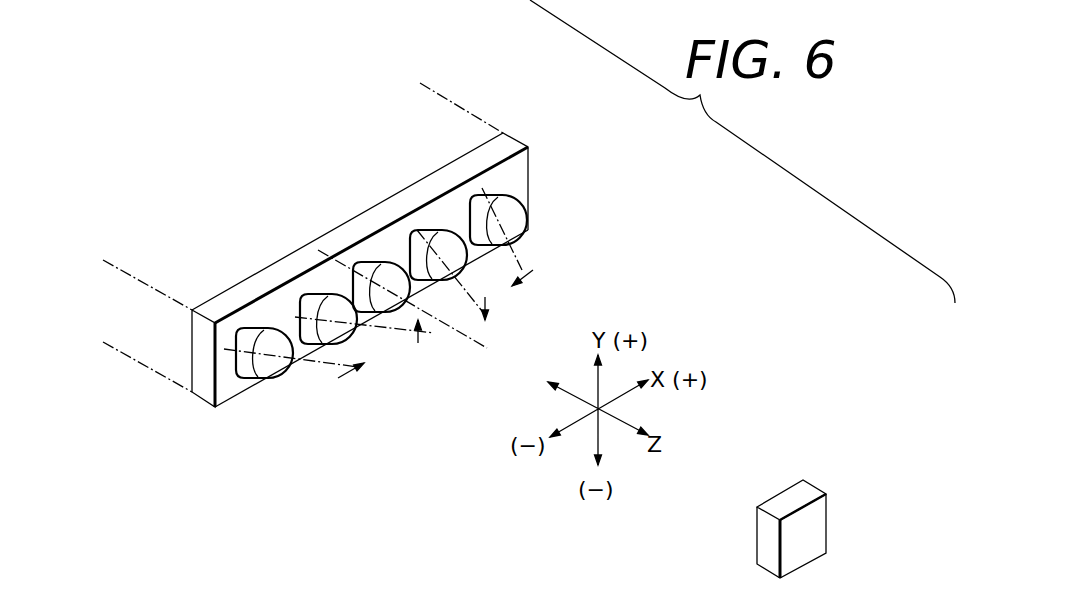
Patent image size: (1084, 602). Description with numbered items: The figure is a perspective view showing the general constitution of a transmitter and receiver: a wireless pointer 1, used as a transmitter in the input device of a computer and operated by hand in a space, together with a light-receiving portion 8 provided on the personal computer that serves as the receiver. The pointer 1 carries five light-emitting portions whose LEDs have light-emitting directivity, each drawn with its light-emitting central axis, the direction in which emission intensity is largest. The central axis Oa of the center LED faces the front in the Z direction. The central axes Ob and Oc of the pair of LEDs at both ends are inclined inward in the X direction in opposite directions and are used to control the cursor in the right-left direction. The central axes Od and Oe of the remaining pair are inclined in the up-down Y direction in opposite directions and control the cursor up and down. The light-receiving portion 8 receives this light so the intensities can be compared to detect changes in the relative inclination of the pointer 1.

The pointer 1 is at (514, 120).
The light-receiving portion 8 is at (788, 492).
The light-emitting central axis Oa is at (462, 337).
The light-emitting central axis Ob is at (317, 366).
The light-emitting central axis Oc is at (523, 258).
The light-emitting central axis Od is at (397, 332).
The light-emitting central axis Oe is at (472, 285).